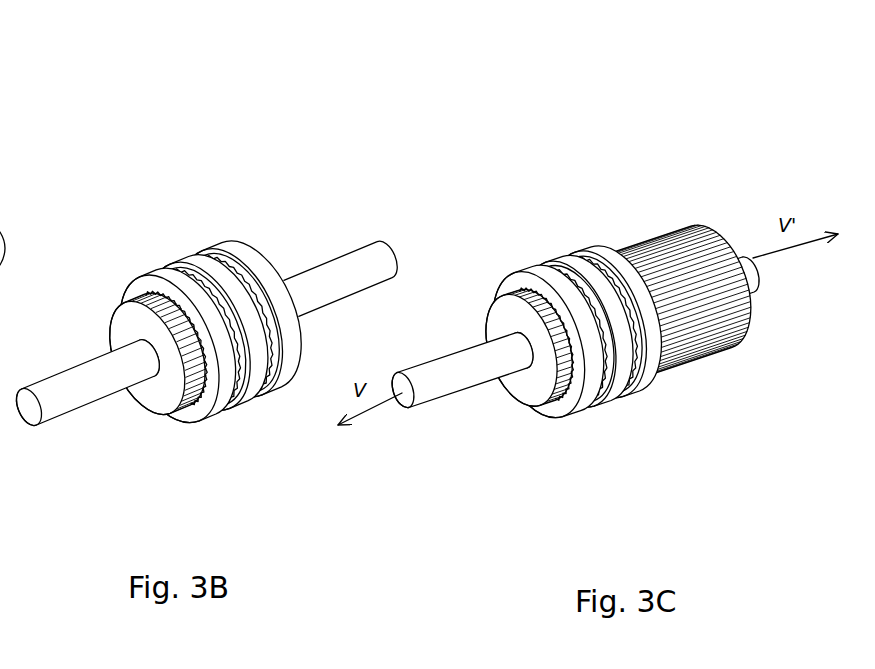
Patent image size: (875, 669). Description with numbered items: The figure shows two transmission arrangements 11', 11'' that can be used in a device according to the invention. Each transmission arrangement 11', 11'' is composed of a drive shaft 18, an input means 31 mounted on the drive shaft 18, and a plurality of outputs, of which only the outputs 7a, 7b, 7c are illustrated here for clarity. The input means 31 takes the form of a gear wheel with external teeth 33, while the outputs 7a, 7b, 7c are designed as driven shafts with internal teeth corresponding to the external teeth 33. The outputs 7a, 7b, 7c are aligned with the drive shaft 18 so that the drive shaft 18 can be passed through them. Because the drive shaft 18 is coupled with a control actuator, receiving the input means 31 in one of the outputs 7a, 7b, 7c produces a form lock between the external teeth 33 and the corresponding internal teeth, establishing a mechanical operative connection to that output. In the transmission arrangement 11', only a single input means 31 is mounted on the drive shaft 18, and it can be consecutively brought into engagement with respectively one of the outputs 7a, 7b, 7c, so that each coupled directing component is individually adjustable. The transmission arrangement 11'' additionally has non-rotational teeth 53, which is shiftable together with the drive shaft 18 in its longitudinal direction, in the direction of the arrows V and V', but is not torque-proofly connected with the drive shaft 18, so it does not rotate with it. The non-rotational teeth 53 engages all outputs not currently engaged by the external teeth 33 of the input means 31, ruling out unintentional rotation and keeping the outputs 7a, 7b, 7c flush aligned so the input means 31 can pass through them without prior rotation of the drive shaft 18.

In FIG. 3B, the transmission arrangement 11' is at (206, 279).
In FIG. 3C, the transmission arrangement 11'' is at (575, 306).
In FIG. 3B, the output 7a is at (167, 288).
In FIG. 3C, the output 7a is at (552, 288).
In FIG. 3B, the output 7b is at (203, 280).
In FIG. 3C, the output 7b is at (575, 264).
In FIG. 3B, the output 7c is at (240, 263).
In FIG. 3C, the output 7c is at (602, 247).
In FIG. 3B, the drive shaft 18 is at (320, 273).
In FIG. 3C, the drive shaft 18 is at (462, 377).
In FIG. 3B, the input means 31 is at (175, 405).
In FIG. 3C, the input means 31 is at (540, 405).
In FIG. 3B, the external teeth 33 is at (187, 420).
In FIG. 3C, the external teeth 33 is at (557, 420).
In FIG. 3C, the non-rotational teeth 53 is at (657, 242).